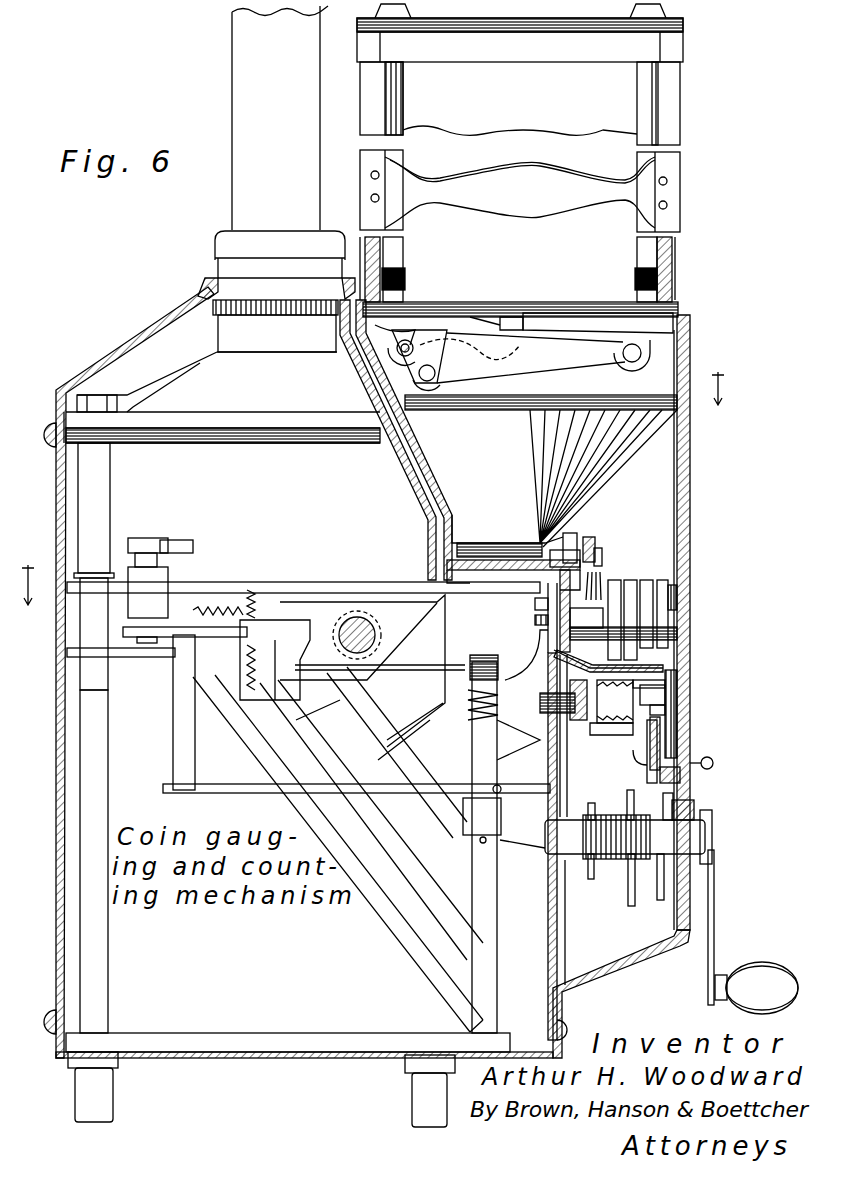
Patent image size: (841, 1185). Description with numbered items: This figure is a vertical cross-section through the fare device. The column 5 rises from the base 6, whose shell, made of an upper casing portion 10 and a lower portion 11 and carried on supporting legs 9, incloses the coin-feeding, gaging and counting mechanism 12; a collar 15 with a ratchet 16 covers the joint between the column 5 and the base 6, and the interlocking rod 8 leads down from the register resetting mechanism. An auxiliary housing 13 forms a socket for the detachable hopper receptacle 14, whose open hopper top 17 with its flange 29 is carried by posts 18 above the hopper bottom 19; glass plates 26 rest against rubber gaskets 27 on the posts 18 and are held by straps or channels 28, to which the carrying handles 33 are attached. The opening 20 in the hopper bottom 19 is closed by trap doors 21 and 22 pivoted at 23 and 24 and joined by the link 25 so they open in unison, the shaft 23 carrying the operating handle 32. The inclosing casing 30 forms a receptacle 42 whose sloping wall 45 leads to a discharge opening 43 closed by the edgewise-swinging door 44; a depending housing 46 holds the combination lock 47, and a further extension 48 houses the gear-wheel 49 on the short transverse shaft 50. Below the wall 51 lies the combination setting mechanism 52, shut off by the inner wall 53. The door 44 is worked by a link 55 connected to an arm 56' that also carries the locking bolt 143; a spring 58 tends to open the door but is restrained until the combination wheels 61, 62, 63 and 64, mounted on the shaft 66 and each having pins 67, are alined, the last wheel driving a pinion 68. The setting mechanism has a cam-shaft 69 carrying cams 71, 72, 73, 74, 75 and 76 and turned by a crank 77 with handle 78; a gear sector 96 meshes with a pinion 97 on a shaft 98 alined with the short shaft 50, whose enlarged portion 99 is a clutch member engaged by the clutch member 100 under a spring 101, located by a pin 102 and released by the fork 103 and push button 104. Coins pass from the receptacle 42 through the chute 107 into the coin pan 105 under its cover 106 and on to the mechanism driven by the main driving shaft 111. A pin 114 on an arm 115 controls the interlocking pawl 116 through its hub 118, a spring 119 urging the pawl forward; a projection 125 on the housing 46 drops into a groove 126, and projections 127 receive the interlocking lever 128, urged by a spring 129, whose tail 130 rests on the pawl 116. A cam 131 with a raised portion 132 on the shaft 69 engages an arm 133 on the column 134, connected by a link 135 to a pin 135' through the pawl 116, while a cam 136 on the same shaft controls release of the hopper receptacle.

The column 5 is at (270, 76).
The base 6 is at (155, 303).
The interlocking rod 8 is at (379, 488).
The supporting legs 9 is at (100, 1097).
The upper portion of the inclosing casing 10 is at (150, 323).
The lower portion of the inclosing casing 11 is at (56, 870).
The coin-feeding, gaging and counting mechanism 12 is at (275, 933).
The auxiliary housing 13 is at (693, 481).
The hopper receptacle 14 is at (685, 163).
The collar 15 is at (232, 248).
The ratchet 16 is at (278, 310).
The hopper top 17 is at (543, 50).
The pillars or posts 18 is at (392, 250).
The hopper bottom 19 is at (510, 317).
The opening 20 is at (445, 318).
The trap door 21 is at (478, 315).
The trap door 22 is at (555, 320).
The pivot shaft of trap door 23 is at (395, 362).
The pivot of trap door 24 is at (632, 362).
The link or connecting rod 25 is at (553, 356).
The glass plates 26 is at (372, 255).
The rubber gaskets 27 is at (405, 272).
The straps or channels 28 is at (375, 103).
The flange 29 is at (685, 48).
The inclosing casing 30 is at (693, 356).
The operating handle 32 is at (470, 343).
The handles 33 is at (520, 192).
The receptacle 42 is at (507, 489).
The discharge opening 43 is at (500, 556).
The door 44 is at (490, 560).
The sloping wall 45 is at (618, 477).
The depending housing 46 is at (693, 531).
The combination lock 47 is at (640, 570).
The further extension 48 is at (670, 683).
The gear-wheel 49 is at (678, 710).
The short transverse shaft 50 is at (680, 697).
The wall 51 is at (602, 662).
The combination setting mechanism 52 is at (600, 898).
The inner wall 53 is at (556, 903).
The link 55 is at (574, 535).
The pin 56' is at (601, 540).
The spring 58 is at (593, 583).
The combination wheel 61 is at (614, 580).
The combination wheel 62 is at (630, 580).
The combination wheel 63 is at (646, 580).
The combination wheel 64 is at (662, 580).
The shaft 66 is at (623, 624).
The pins 67 is at (693, 645).
The pinion 68 is at (693, 598).
The cam-shaft 69 is at (712, 833).
The cam member 71 is at (593, 801).
The cam member 72 is at (596, 858).
The cam member 73 is at (630, 904).
The cam member 74 is at (623, 800).
The cam member 75 is at (658, 900).
The cam member 76 is at (656, 806).
The crank 77 is at (715, 874).
The handle 78 is at (762, 972).
The gear sector 96 is at (540, 752).
The pinion 97 is at (566, 688).
The shaft 98 is at (557, 703).
The enlarged portion / clutch member 99 is at (693, 722).
The clutch member 100 is at (693, 666).
The spring 101 is at (611, 736).
The pin 102 is at (615, 701).
The disengaging fork 103 is at (640, 762).
The push button 104 is at (712, 760).
The coin pan 105 is at (398, 883).
The cover 106 is at (378, 782).
The chute 107 is at (460, 643).
The main driving shaft 111 is at (377, 628).
The pin 114 is at (158, 545).
The arm 115 is at (190, 547).
The interlocking pawl 116 is at (275, 660).
The hub 118 is at (150, 598).
The spring 119 is at (222, 606).
The projection 125 is at (527, 655).
The groove 126 is at (530, 606).
The projections 127 is at (530, 622).
The interlocking lever 128 is at (492, 656).
The spring 129 is at (465, 697).
The tail 130 is at (395, 672).
The cam 131 is at (545, 848).
The raised portion 132 is at (495, 838).
The short arm or lever 133 is at (493, 786).
The column 134 is at (483, 921).
The link 135 is at (308, 687).
The pin 135' is at (131, 712).
The cam 136 is at (700, 808).
The locking bolt 143 is at (614, 548).